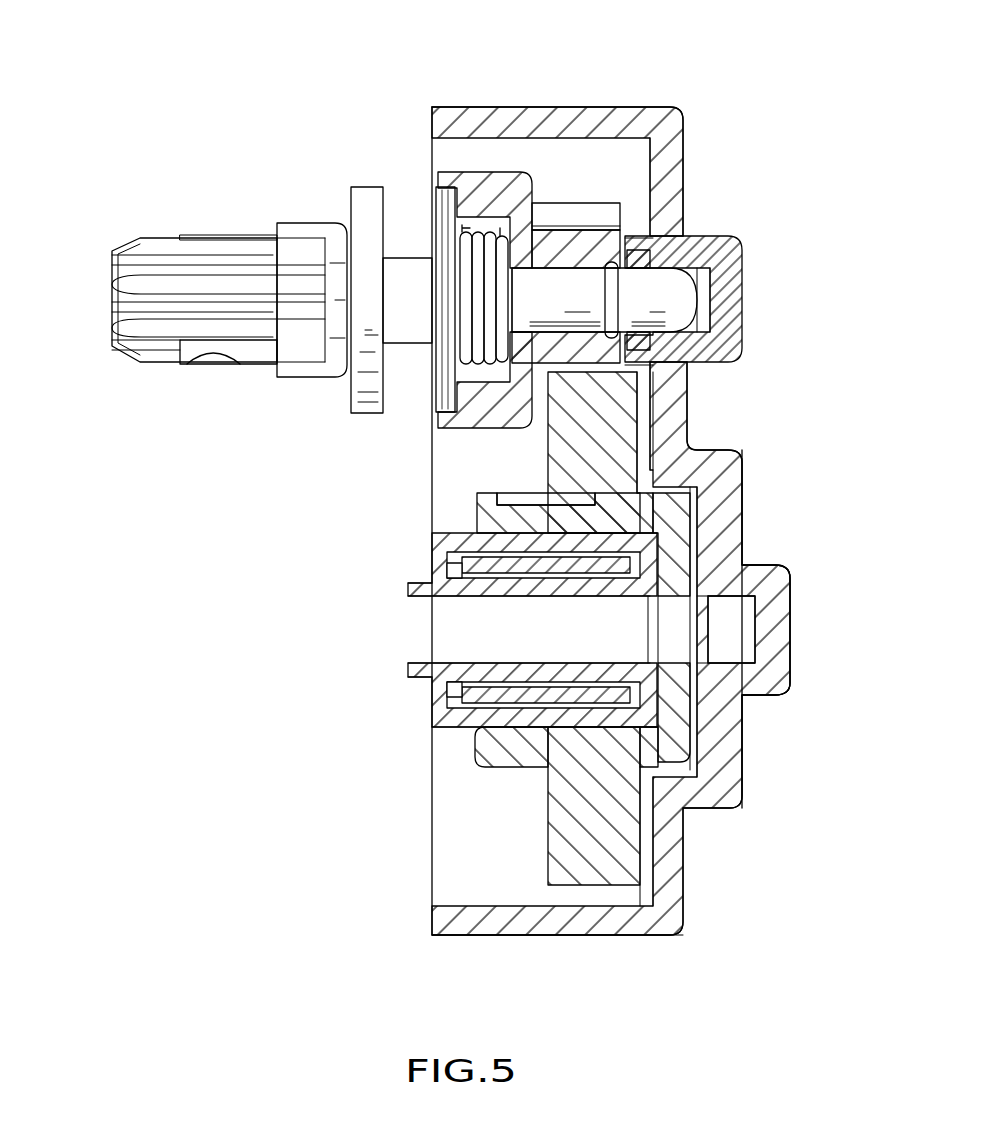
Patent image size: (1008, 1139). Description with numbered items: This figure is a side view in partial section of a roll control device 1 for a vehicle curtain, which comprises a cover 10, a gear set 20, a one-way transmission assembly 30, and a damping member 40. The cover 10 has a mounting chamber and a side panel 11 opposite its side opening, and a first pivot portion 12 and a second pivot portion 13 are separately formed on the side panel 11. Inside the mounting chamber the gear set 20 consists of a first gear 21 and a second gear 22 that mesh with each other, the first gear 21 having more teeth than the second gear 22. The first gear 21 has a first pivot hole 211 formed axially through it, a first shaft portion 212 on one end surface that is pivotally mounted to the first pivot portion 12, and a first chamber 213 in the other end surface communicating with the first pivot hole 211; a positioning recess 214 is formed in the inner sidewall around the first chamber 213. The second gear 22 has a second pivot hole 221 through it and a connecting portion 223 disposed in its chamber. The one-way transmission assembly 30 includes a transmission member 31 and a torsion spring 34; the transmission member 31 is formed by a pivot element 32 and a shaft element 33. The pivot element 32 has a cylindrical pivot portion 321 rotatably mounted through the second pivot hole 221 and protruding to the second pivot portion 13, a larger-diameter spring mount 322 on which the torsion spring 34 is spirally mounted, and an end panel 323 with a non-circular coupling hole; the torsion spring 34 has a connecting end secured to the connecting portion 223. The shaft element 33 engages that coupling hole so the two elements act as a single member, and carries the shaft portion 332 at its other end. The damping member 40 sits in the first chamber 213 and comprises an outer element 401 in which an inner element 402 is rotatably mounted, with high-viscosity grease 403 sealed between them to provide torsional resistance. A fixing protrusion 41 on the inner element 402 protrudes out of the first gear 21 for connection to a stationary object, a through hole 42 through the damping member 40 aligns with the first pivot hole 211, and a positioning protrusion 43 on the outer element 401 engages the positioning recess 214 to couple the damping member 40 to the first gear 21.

The roll control device 1 is at (722, 935).
The cover 10 is at (708, 182).
The side panel 11 is at (685, 430).
The first pivot portion 12 is at (742, 738).
The second pivot portion 13 is at (728, 265).
The gear set 20 is at (557, 165).
The first gear 21 is at (592, 896).
The second gear 22 is at (597, 192).
The first pivot hole 211 is at (670, 598).
The first shaft portion 212 is at (680, 547).
The first chamber 213 is at (575, 727).
The positioning recess 214 is at (493, 512).
The second pivot hole 221 is at (578, 270).
The connecting portion 223 is at (498, 205).
The one-way transmission assembly 30 is at (140, 200).
The transmission member 31 is at (300, 210).
The pivot element 32 is at (692, 304).
The pivot portion 321 is at (577, 302).
The spring mount 322 is at (502, 308).
The end panel 323 is at (443, 225).
The shaft element 33 is at (250, 228).
The shaft portion 332 is at (165, 325).
The torsion spring 34 is at (472, 347).
The damping member 40 is at (455, 730).
The outer element 401 is at (520, 724).
The inner element 402 is at (488, 565).
The grease 403 is at (513, 684).
The fixing protrusion 41 is at (420, 672).
The through hole 42 is at (453, 598).
The positioning protrusion 43 is at (525, 517).